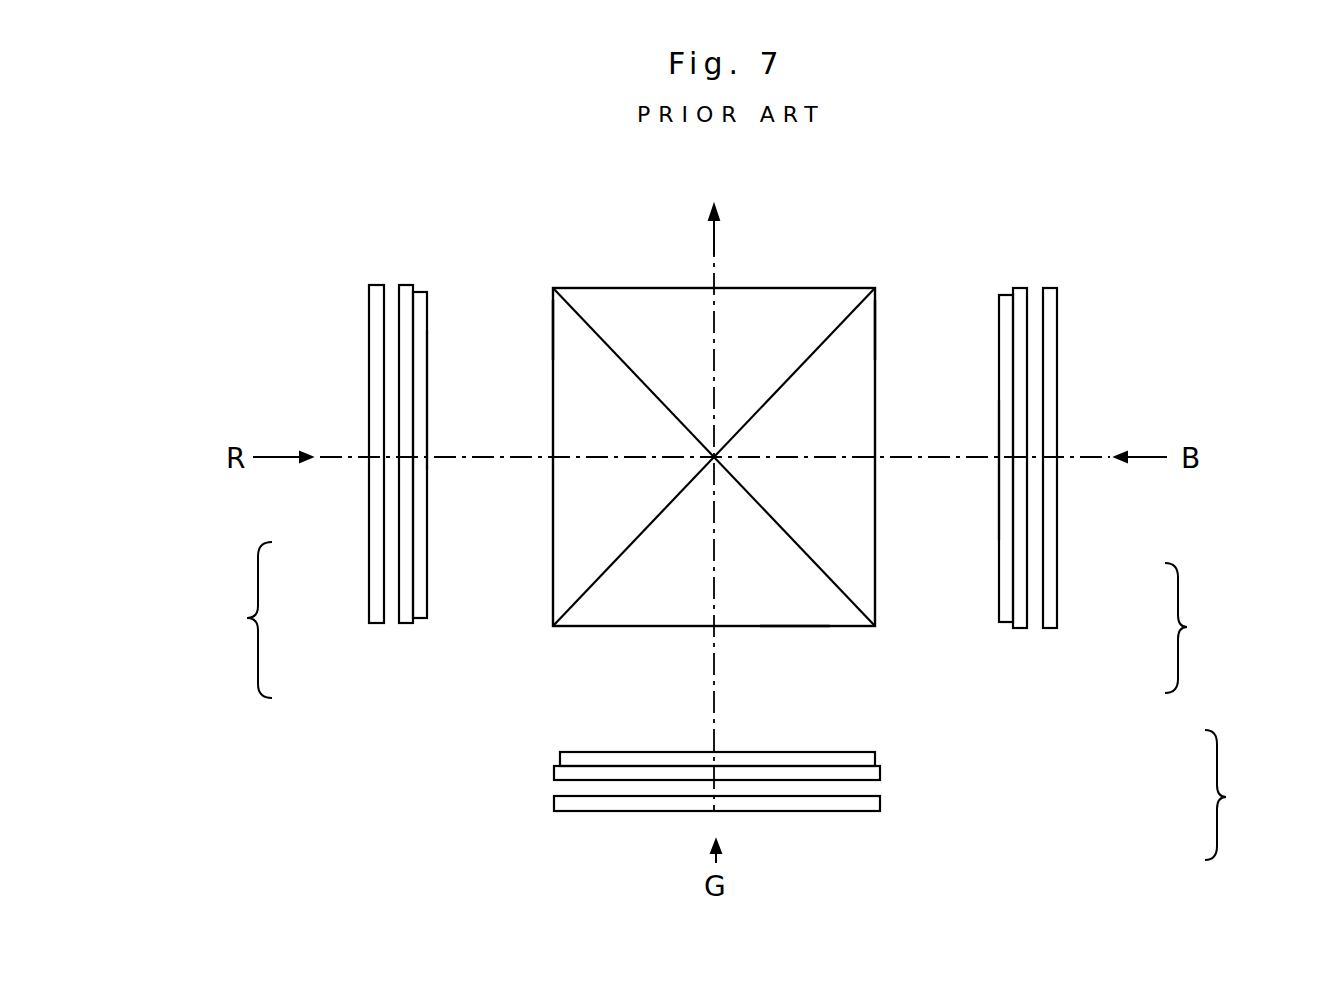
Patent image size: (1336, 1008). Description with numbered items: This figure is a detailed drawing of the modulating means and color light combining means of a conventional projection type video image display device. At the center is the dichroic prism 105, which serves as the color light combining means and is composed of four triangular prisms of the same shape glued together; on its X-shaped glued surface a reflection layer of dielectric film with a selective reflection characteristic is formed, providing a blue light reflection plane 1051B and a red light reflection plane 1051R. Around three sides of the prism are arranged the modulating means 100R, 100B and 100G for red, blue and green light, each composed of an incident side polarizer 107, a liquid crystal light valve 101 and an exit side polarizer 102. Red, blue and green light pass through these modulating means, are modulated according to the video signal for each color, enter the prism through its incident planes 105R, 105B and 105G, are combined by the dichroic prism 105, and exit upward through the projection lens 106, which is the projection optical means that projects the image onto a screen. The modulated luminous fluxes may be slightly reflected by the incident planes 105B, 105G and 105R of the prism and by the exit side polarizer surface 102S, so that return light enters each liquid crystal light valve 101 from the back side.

The projection lens 106 is at (678, 213).
The dichroic prism 105 is at (665, 607).
The red light reflection plane 1051R is at (790, 377).
The blue light reflection plane 1051B is at (608, 342).
The incident plane for red light 105R is at (549, 328).
The incident plane for blue light 105B is at (878, 332).
The incident plane for green light 105G is at (802, 627).
The incident side polarizer 107 is at (374, 575).
The liquid crystal light valve 101 is at (403, 600).
The exit side polarizer 102 is at (418, 614).
The exit side polarizer surface 102S is at (427, 402).
The modulating means for red 100R is at (247, 618).
The modulating means for blue 100B is at (1223, 628).
The modulating means for green 100G is at (1263, 795).